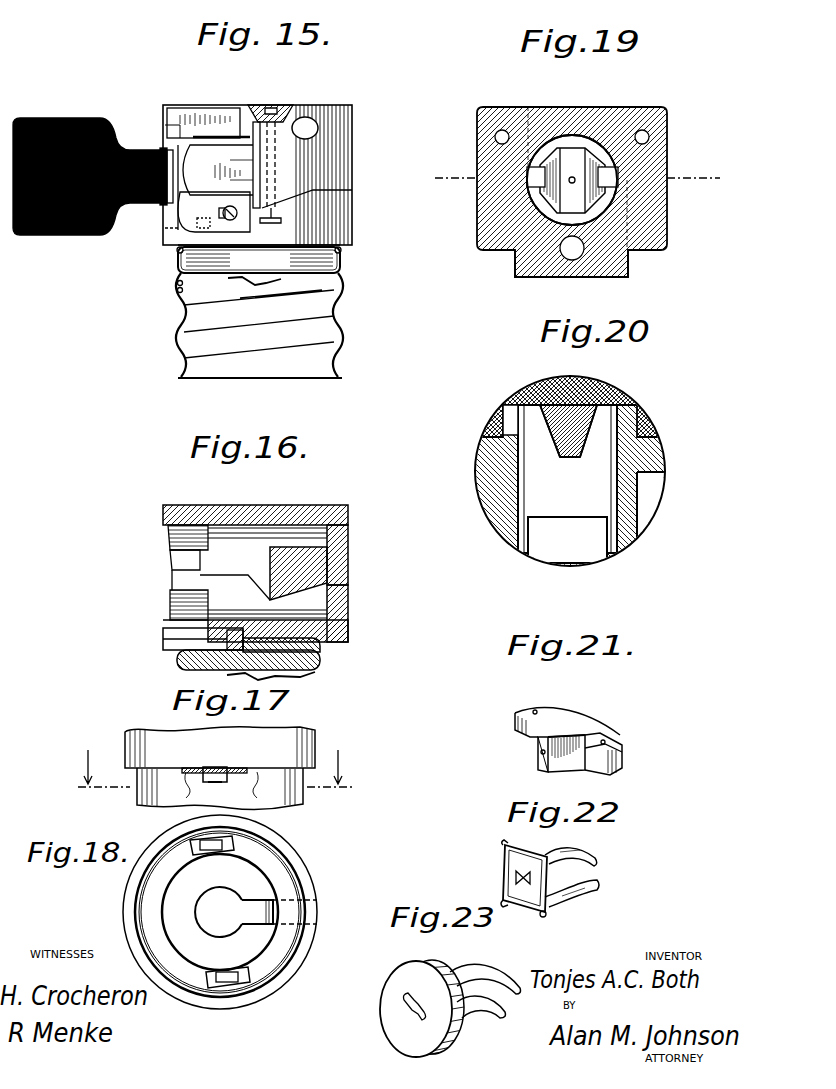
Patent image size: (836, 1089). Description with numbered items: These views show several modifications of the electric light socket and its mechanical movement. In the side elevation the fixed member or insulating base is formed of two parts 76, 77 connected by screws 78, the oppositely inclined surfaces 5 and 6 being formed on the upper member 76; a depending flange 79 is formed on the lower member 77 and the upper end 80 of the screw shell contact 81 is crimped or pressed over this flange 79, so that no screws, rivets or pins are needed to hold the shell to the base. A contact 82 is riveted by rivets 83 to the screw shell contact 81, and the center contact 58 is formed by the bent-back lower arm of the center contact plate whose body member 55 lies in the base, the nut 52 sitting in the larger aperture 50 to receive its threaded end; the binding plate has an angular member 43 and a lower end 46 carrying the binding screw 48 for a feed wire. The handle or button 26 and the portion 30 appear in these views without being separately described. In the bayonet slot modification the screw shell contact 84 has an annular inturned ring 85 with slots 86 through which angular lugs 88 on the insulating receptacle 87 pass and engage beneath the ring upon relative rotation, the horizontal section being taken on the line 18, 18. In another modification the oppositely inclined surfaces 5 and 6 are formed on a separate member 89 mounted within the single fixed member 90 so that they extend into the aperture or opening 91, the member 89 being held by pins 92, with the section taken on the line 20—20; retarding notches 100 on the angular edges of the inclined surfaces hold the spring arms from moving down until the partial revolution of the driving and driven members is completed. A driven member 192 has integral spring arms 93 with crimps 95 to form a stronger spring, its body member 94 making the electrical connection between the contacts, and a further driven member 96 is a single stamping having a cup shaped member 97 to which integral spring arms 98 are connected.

In FIG. 15, the knob 26 is at (93, 163).
In FIG. 15, the angular member 43 is at (250, 140).
In FIG. 15, the screws 78 is at (273, 107).
In FIG. 16, the screws 78 is at (348, 510).
In FIG. 15, the upper part of fixed member 76 is at (352, 118).
In FIG. 16, the upper part of fixed member 76 is at (348, 530).
In FIG. 15, the lower member of fixed member 77 is at (352, 224).
In FIG. 16, the lower member of fixed member 77 is at (348, 618).
In FIG. 15, the binding screw 48 is at (192, 212).
In FIG. 15, the lower end of binding plate 46 is at (237, 224).
In FIG. 15, the contact 82 is at (178, 250).
In FIG. 15, the upper end of screw shell contact 80 is at (176, 256).
In FIG. 15, the depending flange 79 is at (259, 260).
In FIG. 16, the depending flange 79 is at (177, 662).
In FIG. 15, the rivets 83 is at (177, 288).
In FIG. 15, the center contact 58 is at (253, 287).
In FIG. 16, the center contact 58 is at (300, 678).
In FIG. 18, the center contact 58 is at (234, 912).
In FIG. 15, the screw shell contact 81 is at (342, 316).
In FIG. 19, the pins 92 is at (528, 120).
In FIG. 20, the pins 92 is at (517, 400).
In FIG. 19, the separate member 89 is at (574, 162).
In FIG. 20, the separate member 89 is at (586, 404).
In FIG. 21, the separate member 89 is at (605, 733).
In FIG. 19, the fixed member 90 is at (667, 147).
In FIG. 20, the fixed member 90 is at (653, 442).
In FIG. 19, the section line 20 is at (579, 180).
In FIG. 19, the oppositely inclined surface 5 is at (546, 186).
In FIG. 20, the oppositely inclined surface 5 is at (549, 432).
In FIG. 21, the oppositely inclined surface 5 is at (563, 760).
In FIG. 19, the aperture or opening 91 is at (534, 212).
In FIG. 20, the aperture or opening 91 is at (594, 486).
In FIG. 19, the tab 30 is at (517, 252).
In FIG. 19, the larger aperture 50 is at (570, 260).
In FIG. 16, the oppositely inclined surface 6 is at (300, 603).
In FIG. 21, the oppositely inclined surface 6 is at (568, 737).
In FIG. 16, the nut 52 is at (163, 640).
In FIG. 16, the body member 55 is at (322, 652).
In FIG. 17, the insulating receptacle 87 is at (313, 738).
In FIG. 17, the slots 86 is at (197, 768).
In FIG. 18, the slots 86 is at (199, 858).
In FIG. 17, the angular lugs 88 is at (232, 772).
In FIG. 18, the angular lugs 88 is at (216, 851).
In FIG. 17, the annular inturned ring 85 is at (223, 791).
In FIG. 18, the annular inturned ring 85 is at (280, 926).
In FIG. 17, the screw shell contact 84 is at (290, 797).
In FIG. 18, the screw shell contact 84 is at (298, 888).
In FIG. 17, the section line 18 is at (209, 775).
In FIG. 21, the retarding notches 100 is at (562, 734).
In FIG. 22, the crimps 95 is at (512, 836).
In FIG. 22, the integral spring arms 93 is at (577, 850).
In FIG. 22, the body member 94 is at (506, 862).
In FIG. 22, the driven member 192 is at (510, 877).
In FIG. 23, the integral spring arms 98 is at (482, 973).
In FIG. 23, the driven member 96 is at (381, 1003).
In FIG. 23, the cup shaped member 97 is at (458, 1040).